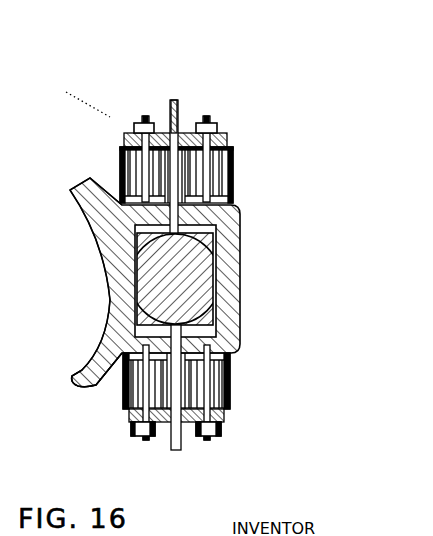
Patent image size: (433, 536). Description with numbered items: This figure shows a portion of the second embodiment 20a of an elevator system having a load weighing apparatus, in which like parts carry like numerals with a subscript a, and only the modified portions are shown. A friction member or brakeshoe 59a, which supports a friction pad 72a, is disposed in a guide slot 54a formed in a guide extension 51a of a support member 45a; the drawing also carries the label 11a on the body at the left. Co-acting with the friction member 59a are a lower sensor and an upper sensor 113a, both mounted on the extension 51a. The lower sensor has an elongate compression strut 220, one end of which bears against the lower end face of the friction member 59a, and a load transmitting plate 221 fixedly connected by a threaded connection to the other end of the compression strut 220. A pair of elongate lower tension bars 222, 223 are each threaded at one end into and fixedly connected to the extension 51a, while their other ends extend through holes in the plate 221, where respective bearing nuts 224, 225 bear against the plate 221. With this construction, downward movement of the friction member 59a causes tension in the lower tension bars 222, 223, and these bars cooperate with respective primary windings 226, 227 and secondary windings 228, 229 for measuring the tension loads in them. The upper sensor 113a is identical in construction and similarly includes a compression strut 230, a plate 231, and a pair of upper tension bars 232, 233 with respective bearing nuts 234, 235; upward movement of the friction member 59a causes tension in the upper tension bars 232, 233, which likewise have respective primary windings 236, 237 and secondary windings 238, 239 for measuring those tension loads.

The body 11a is at (80, 452).
The second embodiment 20a is at (172, 78).
The support member 45a is at (102, 383).
The guide extension 51a is at (236, 216).
The guide slot 54a is at (214, 301).
The friction member 59a is at (226, 312).
The friction pad 72a is at (232, 241).
The upper sensor 113a is at (110, 117).
The compression strut 220 is at (179, 450).
The load transmitting plate 221 is at (224, 421).
The lower tension bar 222 is at (145, 438).
The lower tension bar 223 is at (212, 436).
The bearing nut 224 is at (136, 430).
The bearing nut 225 is at (213, 432).
The primary winding 226 is at (141, 393).
The primary winding 227 is at (213, 381).
The secondary winding 228 is at (138, 408).
The secondary winding 229 is at (220, 393).
The compression strut 230 is at (178, 106).
The plate 231 is at (224, 134).
The upper tension bar 232 is at (146, 116).
The upper tension bar 233 is at (207, 116).
The bearing nut 234 is at (137, 125).
The bearing nut 235 is at (214, 126).
The primary winding 236 is at (139, 163).
The primary winding 237 is at (214, 163).
The secondary winding 238 is at (134, 176).
The secondary winding 239 is at (218, 178).